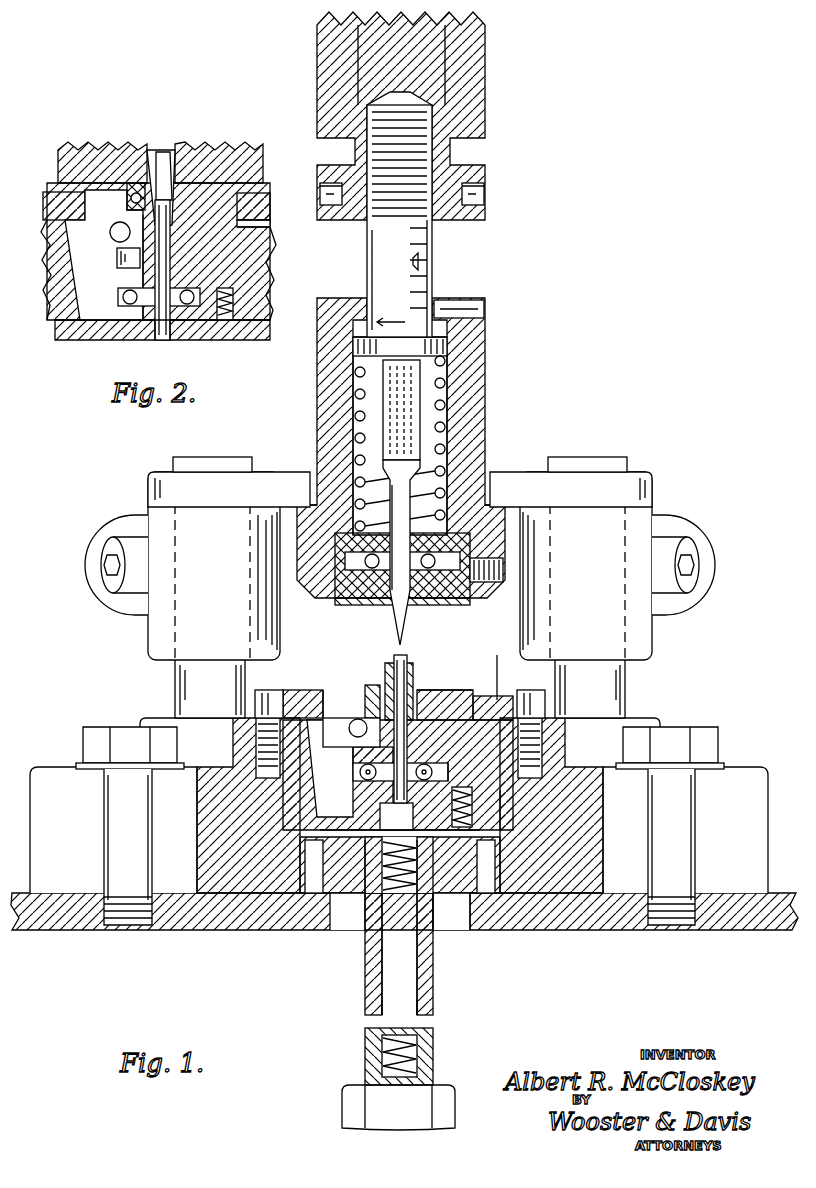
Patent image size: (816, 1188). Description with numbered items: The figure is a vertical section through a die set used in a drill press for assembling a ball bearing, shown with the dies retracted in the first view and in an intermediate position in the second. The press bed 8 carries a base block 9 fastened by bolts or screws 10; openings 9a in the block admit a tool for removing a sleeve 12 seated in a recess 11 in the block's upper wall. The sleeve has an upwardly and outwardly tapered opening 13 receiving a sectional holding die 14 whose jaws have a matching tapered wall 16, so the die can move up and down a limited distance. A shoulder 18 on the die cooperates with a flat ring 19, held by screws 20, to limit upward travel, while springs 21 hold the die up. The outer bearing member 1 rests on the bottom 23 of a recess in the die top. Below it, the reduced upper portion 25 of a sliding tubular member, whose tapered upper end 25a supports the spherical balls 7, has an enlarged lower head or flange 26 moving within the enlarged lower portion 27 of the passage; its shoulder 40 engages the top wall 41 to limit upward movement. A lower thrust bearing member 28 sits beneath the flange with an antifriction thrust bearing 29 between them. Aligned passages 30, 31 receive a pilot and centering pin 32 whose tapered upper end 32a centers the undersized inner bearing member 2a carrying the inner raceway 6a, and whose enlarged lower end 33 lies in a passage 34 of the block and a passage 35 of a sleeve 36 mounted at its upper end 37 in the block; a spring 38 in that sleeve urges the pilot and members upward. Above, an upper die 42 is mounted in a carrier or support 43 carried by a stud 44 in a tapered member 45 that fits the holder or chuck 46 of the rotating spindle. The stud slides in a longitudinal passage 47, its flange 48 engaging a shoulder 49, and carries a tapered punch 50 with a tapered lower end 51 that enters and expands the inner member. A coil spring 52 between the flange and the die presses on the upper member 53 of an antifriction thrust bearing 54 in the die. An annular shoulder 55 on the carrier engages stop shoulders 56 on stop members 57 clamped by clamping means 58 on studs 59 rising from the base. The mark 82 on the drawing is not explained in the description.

In FIG. 2, the outer bearing member 1 is at (125, 205).
In FIG. 2, the undersized inner bearing member 2a is at (129, 228).
In FIG. 1, the inner raceway 6a is at (365, 692).
In FIG. 2, the spherical balls 7 is at (125, 198).
In FIG. 1, the bed 8 is at (72, 920).
In FIG. 1, the base block 9 is at (735, 768).
In FIG. 2, the base block 9 is at (246, 332).
In FIG. 1, the openings 9a is at (451, 914).
In FIG. 1, the bolts or screws 10 is at (112, 832).
In FIG. 1, the recess 11 is at (352, 755).
In FIG. 1, the sleeve 12 is at (265, 768).
In FIG. 2, the sleeve 12 is at (270, 275).
In FIG. 1, the tapered opening 13 is at (360, 778).
In FIG. 2, the tapered opening 13 is at (268, 248).
In FIG. 2, the sectional holding die 14 is at (265, 236).
In FIG. 2, the tapered wall 16 is at (47, 280).
In FIG. 1, the shoulder 18 is at (320, 690).
In FIG. 1, the flat ring 19 is at (290, 700).
In FIG. 2, the flat ring 19 is at (55, 200).
In FIG. 1, the screws 20 is at (268, 690).
In FIG. 1, the springs 21 is at (480, 805).
In FIG. 1, the recess bottom 23 is at (434, 864).
In FIG. 1, the reduced upper portion of sliding tubular member 25 is at (462, 700).
In FIG. 2, the reduced upper portion of sliding tubular member 25 is at (118, 243).
In FIG. 1, the tapered upper end 25a is at (420, 700).
In FIG. 1, the enlarged lower head or flange 26 is at (456, 786).
In FIG. 2, the enlarged lower head or flange 26 is at (143, 290).
In FIG. 1, the enlarged lower portion of opening 27 is at (372, 845).
In FIG. 1, the lower thrust bearing member 28 is at (362, 797).
In FIG. 2, the lower thrust bearing member 28 is at (120, 330).
In FIG. 1, the antifriction thrust bearing 29 is at (356, 760).
In FIG. 2, the antifriction thrust bearing 29 is at (118, 298).
In FIG. 1, the passage 30 is at (357, 720).
In FIG. 1, the passage 31 is at (398, 805).
In FIG. 1, the pilot and centering pin 32 is at (352, 730).
In FIG. 2, the pilot and centering pin 32 is at (158, 335).
In FIG. 1, the tapered upper end of pilot pin 32a is at (403, 672).
In FIG. 1, the enlarged lower end 33 is at (400, 816).
In FIG. 1, the passage 34 is at (461, 758).
In FIG. 1, the passage 35 is at (418, 968).
In FIG. 1, the sleeve 36 is at (435, 989).
In FIG. 1, the upper end of sleeve 37 is at (432, 855).
In FIG. 1, the spring 38 is at (398, 893).
In FIG. 1, the shoulder 40 is at (506, 671).
In FIG. 2, the shoulder or top wall 41 is at (117, 268).
In FIG. 1, the upper die 42 is at (442, 604).
In FIG. 2, the upper die 42 is at (215, 150).
In FIG. 1, the carrier or support 43 is at (470, 428).
In FIG. 2, the carrier or support 43 is at (263, 155).
In FIG. 1, the stud 44 is at (432, 282).
In FIG. 1, the tapered member 45 is at (445, 103).
In FIG. 1, the holder or chuck 46 is at (325, 68).
In FIG. 1, the longitudinal passage 47 is at (446, 394).
In FIG. 1, the flange 48 is at (447, 352).
In FIG. 1, the shoulder 49 is at (447, 340).
In FIG. 1, the tapered punch 50 is at (358, 604).
In FIG. 2, the tapered punch 50 is at (163, 150).
In FIG. 1, the tapered lower end of punch 51 is at (395, 636).
In FIG. 2, the tapered lower end of punch 51 is at (152, 160).
In FIG. 1, the coil spring 52 is at (440, 472).
In FIG. 1, the upper member of thrust bearing 53 is at (382, 548).
In FIG. 1, the antifriction thrust bearing 54 is at (320, 600).
In FIG. 1, the annular shoulder 55 is at (500, 512).
In FIG. 1, the stop shoulders 56 is at (280, 520).
In FIG. 1, the stop members 57 is at (152, 492).
In FIG. 1, the clamping means 58 is at (106, 578).
In FIG. 1, the upwardly extending studs 59 is at (178, 674).
In FIG. 1, the direction arrow 82 is at (392, 311).